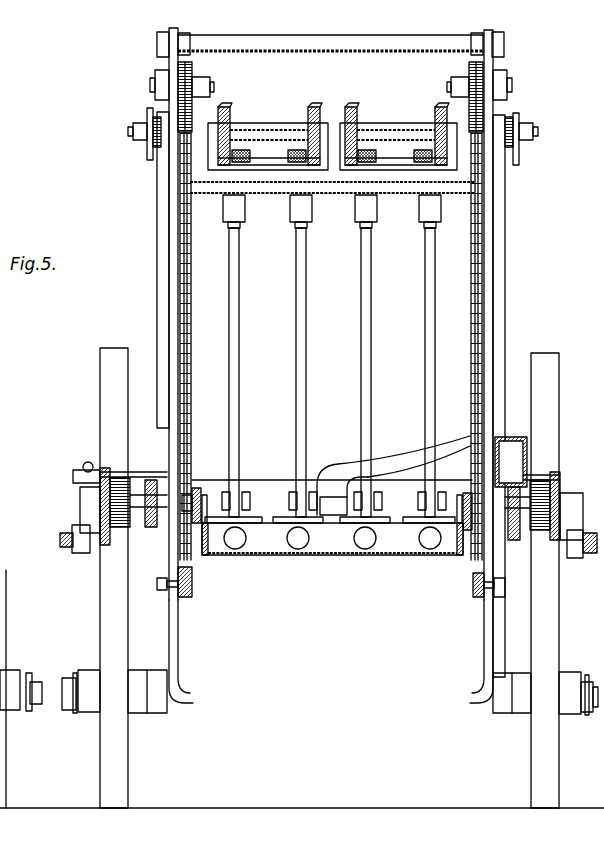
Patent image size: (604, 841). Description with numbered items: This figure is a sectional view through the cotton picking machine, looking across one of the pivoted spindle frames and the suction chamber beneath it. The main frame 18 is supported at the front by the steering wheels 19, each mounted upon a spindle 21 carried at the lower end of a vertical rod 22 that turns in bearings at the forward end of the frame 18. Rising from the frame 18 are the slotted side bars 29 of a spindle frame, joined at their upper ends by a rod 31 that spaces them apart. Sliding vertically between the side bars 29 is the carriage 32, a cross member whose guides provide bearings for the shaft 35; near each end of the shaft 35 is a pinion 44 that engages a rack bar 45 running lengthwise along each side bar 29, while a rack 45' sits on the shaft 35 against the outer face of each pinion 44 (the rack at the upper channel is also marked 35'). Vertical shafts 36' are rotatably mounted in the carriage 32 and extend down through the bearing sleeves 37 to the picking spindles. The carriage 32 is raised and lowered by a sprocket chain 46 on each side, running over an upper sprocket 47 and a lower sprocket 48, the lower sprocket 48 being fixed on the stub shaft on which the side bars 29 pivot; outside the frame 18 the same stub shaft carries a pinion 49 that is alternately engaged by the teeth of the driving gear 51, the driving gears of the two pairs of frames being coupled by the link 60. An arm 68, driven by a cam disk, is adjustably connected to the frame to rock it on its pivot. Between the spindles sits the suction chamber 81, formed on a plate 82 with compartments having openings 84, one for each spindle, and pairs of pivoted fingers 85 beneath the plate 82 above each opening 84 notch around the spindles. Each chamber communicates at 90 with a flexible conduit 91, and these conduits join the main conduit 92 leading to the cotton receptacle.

The rod 31 is at (328, 40).
The slotted side bar 29 is at (175, 290).
The upper sprocket 47 is at (196, 72).
The rack 35' is at (333, 126).
The shaft 35 is at (332, 139).
The vertical shaft 36' is at (332, 155).
The pinion 44 is at (141, 148).
The rack 45' is at (283, 262).
The rack bar 45 is at (327, 394).
The sprocket chain 46 is at (192, 366).
The carriage 32 is at (344, 182).
The bearing sleeve 37 is at (291, 210).
The driving gear 51 is at (100, 373).
The frame 18 is at (145, 533).
The pinion 49 is at (110, 503).
The link 60 is at (67, 553).
The lower sprocket 48 is at (180, 527).
The plate 82 is at (250, 510).
The finger 85 is at (258, 520).
The suction chamber 81 is at (333, 548).
The opening 84 is at (235, 549).
The communication 90 is at (331, 497).
The flexible conduit 91 is at (419, 461).
The main conduit 92 is at (518, 457).
The arm 68 is at (473, 598).
The vertical rod 22 is at (188, 640).
The spindle 21 is at (63, 682).
The front steering wheel 19 is at (107, 753).